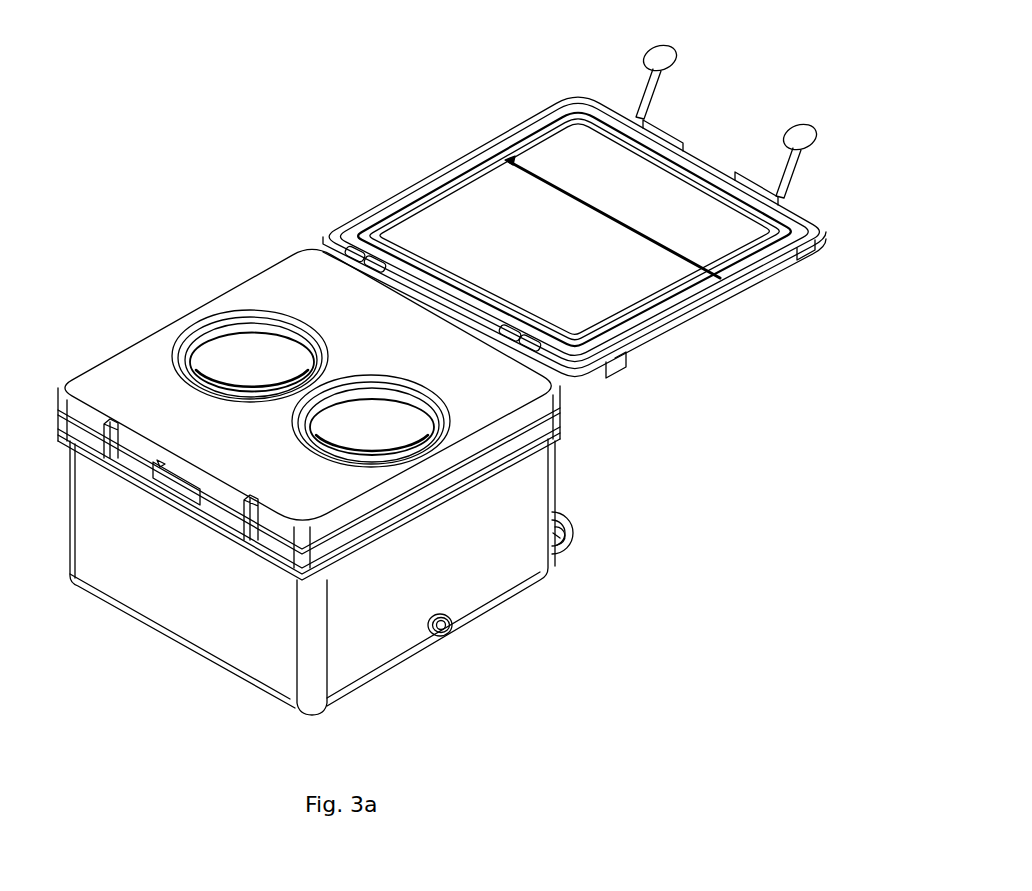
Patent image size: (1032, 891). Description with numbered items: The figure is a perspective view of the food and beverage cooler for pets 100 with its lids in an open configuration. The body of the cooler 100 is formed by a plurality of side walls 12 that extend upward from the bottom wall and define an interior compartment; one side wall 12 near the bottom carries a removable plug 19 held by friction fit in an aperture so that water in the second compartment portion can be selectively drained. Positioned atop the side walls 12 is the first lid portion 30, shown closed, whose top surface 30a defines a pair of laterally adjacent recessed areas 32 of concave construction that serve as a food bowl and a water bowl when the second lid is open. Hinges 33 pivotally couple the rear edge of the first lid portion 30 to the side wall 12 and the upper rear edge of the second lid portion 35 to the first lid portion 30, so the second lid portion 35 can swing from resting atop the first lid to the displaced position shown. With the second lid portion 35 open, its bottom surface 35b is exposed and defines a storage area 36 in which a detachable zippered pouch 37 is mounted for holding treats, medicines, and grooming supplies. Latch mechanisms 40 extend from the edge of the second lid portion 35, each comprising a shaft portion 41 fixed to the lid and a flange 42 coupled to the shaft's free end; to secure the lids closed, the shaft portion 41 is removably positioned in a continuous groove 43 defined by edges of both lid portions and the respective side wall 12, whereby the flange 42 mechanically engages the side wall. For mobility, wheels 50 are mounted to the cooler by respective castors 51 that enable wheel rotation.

The food and beverage cooler for pets 100 is at (165, 263).
The side walls 12 is at (161, 573).
The plug 19 is at (443, 633).
The first lid portion 30 is at (546, 421).
The top surface 30a is at (461, 362).
The recessed areas 32 is at (378, 393).
The hinges 33 is at (352, 232).
The second lid portion 35 is at (781, 285).
The bottom surface 35b is at (576, 90).
The storage area 36 is at (685, 288).
The zippered pouch 37 is at (488, 203).
The latch mechanisms 40 is at (687, 82).
The shaft portion 41 is at (645, 90).
The flange 42 is at (668, 55).
The groove 43 is at (247, 528).
The wheels 50 is at (560, 520).
The castors 51 is at (562, 543).